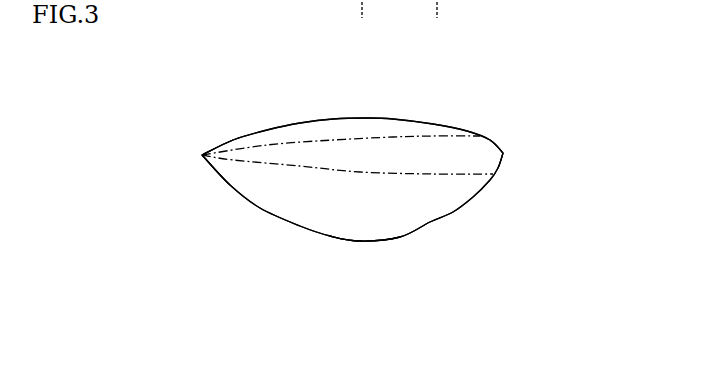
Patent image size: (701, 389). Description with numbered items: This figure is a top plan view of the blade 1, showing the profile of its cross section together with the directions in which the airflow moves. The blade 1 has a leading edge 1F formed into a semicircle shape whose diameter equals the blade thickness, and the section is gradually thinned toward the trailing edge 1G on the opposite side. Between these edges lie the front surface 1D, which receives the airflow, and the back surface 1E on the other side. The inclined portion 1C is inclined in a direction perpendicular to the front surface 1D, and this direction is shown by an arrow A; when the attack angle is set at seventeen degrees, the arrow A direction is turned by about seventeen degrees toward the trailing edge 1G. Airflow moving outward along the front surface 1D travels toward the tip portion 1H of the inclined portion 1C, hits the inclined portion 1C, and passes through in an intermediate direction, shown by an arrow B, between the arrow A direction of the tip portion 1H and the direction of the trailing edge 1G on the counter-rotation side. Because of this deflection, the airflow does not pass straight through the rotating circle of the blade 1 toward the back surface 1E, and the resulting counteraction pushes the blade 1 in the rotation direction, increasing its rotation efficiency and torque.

The blade 1 is at (510, 113).
The inclined portion 1C is at (453, 213).
The front surface 1D is at (297, 173).
The back surface 1E is at (393, 138).
The leading edge 1F is at (503, 153).
The trailing edge 1G is at (202, 155).
The tip portion 1H is at (364, 242).
The arrow A is at (358, 172).
The arrow B is at (322, 215).